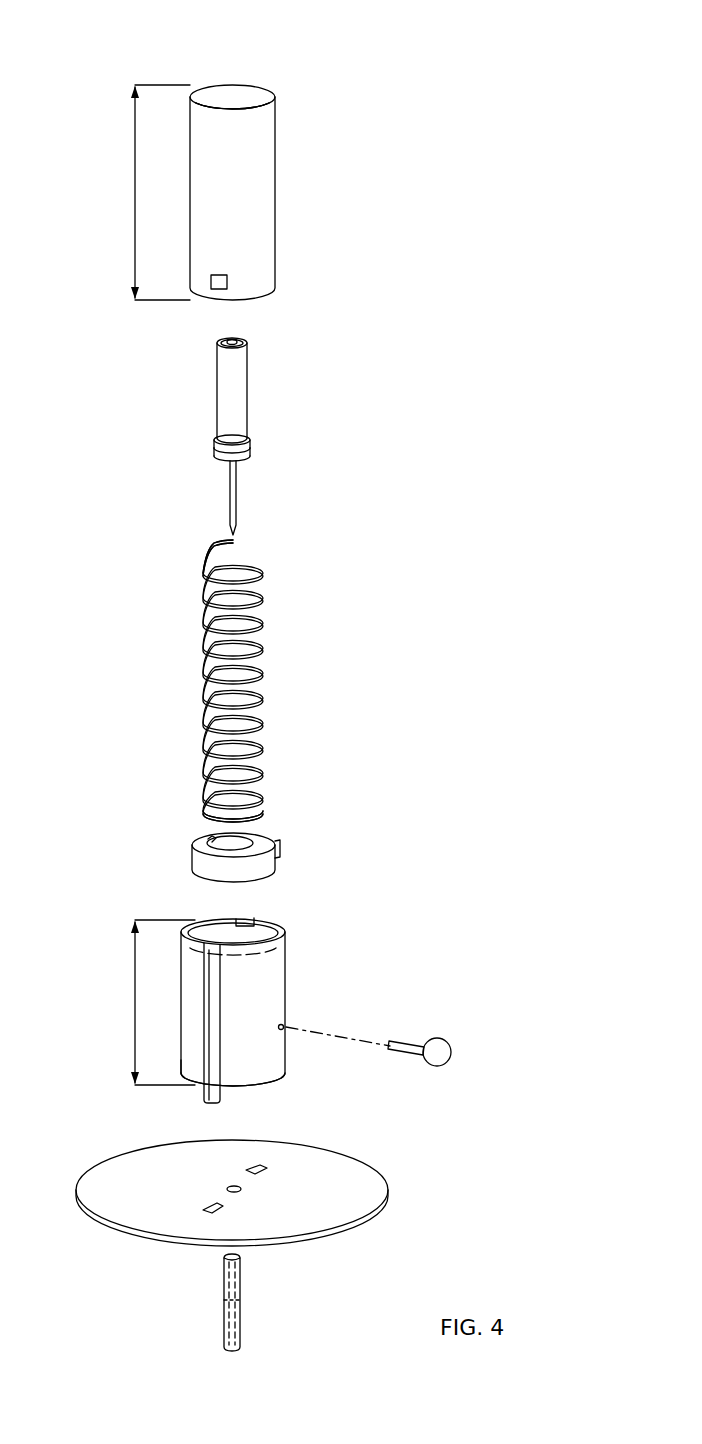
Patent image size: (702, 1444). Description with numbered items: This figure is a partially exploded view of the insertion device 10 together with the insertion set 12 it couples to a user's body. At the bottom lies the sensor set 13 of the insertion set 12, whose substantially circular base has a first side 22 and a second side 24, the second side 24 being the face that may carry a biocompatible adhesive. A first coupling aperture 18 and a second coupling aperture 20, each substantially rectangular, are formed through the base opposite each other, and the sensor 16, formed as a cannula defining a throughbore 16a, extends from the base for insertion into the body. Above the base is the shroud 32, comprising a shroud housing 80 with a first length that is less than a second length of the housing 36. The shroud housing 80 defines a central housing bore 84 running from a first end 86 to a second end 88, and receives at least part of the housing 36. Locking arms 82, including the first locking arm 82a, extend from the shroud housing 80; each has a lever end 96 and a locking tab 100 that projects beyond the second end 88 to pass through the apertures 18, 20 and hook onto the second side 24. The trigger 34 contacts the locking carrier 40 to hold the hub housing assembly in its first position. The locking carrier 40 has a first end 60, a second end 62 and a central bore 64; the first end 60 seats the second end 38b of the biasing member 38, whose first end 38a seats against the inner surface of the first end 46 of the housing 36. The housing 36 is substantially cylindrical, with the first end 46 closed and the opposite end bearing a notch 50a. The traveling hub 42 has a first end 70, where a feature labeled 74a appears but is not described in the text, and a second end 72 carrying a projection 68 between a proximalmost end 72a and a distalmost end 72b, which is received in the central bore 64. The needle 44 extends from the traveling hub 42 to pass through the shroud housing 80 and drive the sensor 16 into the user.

The insertion device 10 is at (462, 205).
The insertion set 12 is at (412, 1152).
The sensor set 13 is at (257, 1182).
The sensor 16 is at (253, 1303).
The throughbore 16a is at (225, 1300).
The first coupling aperture 18 is at (207, 1207).
The second coupling aperture 20 is at (243, 1171).
The first side 22 is at (383, 1183).
The second side 24 is at (354, 1226).
The shroud 32 is at (262, 991).
The trigger 34 is at (416, 1047).
The housing 36 is at (261, 180).
The biasing member 38 is at (294, 681).
The first end of biasing member 38a is at (241, 545).
The second end of biasing member 38b is at (264, 808).
The locking carrier 40 is at (266, 831).
The traveling hub 42 is at (287, 376).
The needle 44 is at (238, 512).
The first end of housing 46 is at (263, 80).
The notch 50a is at (214, 289).
The first end of locking carrier 60 is at (262, 842).
The second end of locking carrier 62 is at (265, 876).
The central bore 64 is at (200, 830).
The projection 68 is at (215, 446).
The first end of traveling hub 70 is at (246, 340).
The second end of traveling hub 72 is at (230, 453).
The proximalmost end 72a is at (250, 438).
The distalmost end 72b is at (247, 462).
The pin upper end 74a is at (230, 342).
The shroud housing 80 is at (302, 918).
The locking arms 82 is at (167, 1090).
The first locking arm 82a is at (190, 1092).
The central housing bore 84 is at (210, 910).
The first end of shroud housing 86 is at (200, 927).
The second end of shroud housing 88 is at (280, 1080).
The lever end 96 is at (285, 961).
The locking tab 100 is at (222, 1095).